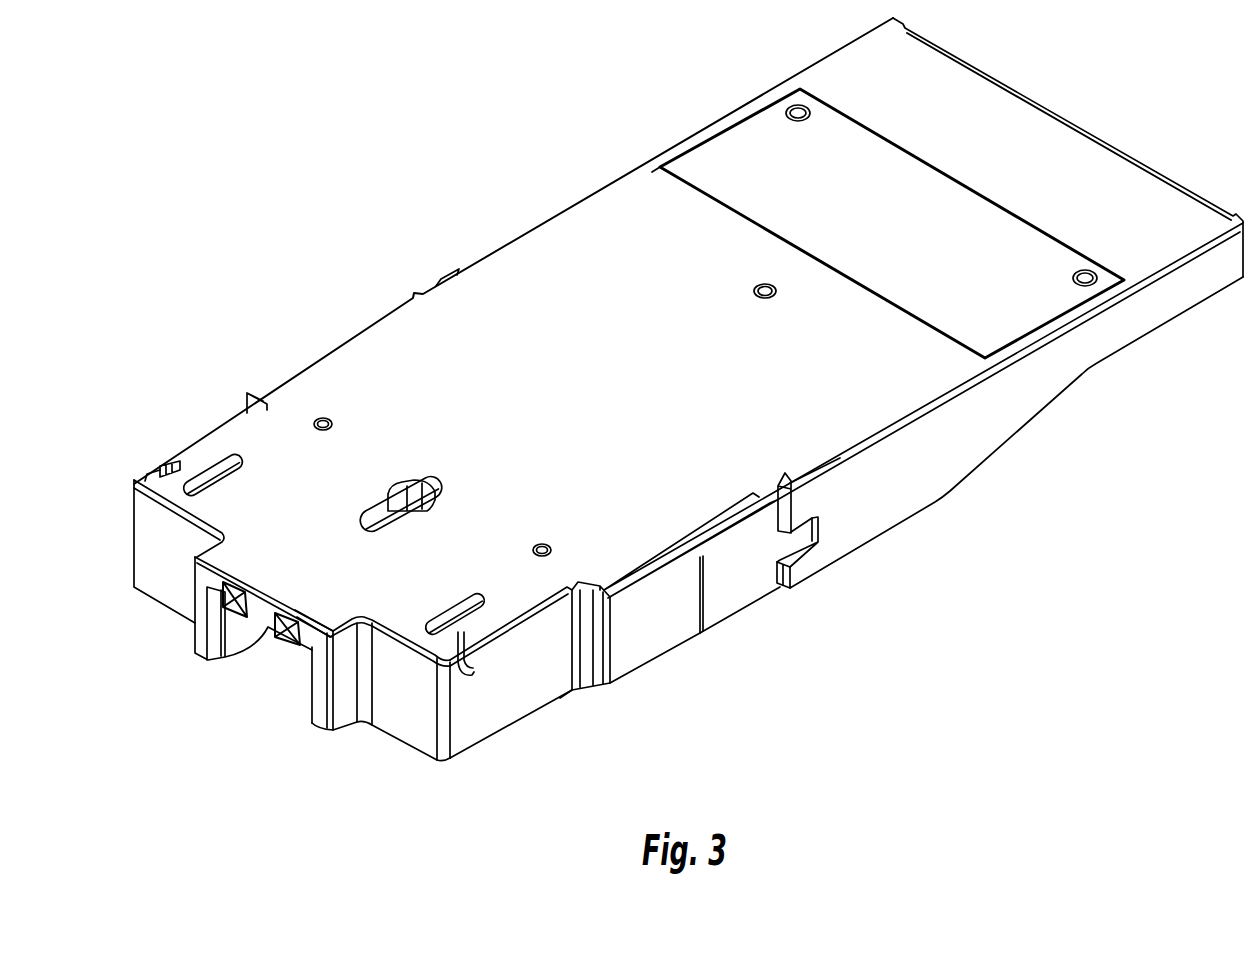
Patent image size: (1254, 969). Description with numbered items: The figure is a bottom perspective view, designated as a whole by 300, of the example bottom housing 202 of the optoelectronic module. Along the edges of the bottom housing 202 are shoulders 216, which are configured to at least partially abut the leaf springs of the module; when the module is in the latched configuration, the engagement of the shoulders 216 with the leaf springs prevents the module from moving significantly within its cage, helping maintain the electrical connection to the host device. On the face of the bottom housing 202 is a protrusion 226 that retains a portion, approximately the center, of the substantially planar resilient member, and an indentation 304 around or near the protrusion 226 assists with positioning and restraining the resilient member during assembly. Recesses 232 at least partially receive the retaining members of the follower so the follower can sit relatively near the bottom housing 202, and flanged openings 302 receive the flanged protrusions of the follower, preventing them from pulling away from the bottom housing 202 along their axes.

The optical transceiver module housing assembly 300 is at (166, 134).
The bottom housing 202 is at (862, 367).
The shoulders 216 is at (782, 583).
The protrusion 226 is at (409, 480).
The recesses 232 is at (213, 466).
The flanged openings 302 is at (149, 465).
The indentation 304 is at (386, 500).